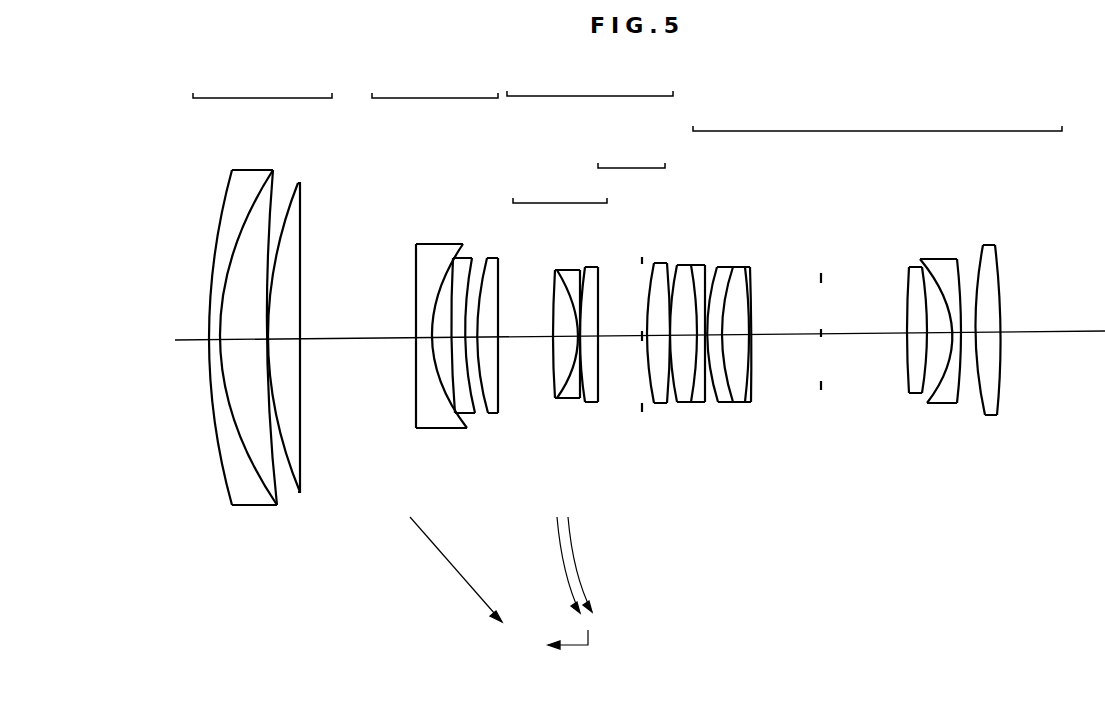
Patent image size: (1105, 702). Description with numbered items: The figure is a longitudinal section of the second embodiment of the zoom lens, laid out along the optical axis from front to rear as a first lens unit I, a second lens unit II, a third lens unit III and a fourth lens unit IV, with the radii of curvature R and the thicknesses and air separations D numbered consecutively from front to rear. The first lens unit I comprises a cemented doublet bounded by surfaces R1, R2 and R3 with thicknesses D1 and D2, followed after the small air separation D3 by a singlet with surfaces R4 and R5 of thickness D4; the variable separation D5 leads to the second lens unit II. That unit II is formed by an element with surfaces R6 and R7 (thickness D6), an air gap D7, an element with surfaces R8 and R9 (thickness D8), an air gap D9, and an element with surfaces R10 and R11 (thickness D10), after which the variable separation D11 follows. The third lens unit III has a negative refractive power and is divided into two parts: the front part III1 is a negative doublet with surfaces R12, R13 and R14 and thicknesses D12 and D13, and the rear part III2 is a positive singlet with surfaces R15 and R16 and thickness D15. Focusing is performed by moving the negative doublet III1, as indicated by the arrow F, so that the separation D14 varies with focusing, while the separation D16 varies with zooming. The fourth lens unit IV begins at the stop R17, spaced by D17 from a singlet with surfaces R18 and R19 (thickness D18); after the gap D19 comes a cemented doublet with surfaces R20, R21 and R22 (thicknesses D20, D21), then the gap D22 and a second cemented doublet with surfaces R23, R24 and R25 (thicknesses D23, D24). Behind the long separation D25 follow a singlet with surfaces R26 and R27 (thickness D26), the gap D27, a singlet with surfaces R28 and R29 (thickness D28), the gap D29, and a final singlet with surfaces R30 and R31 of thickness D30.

The first lens unit I is at (212, 97).
The second lens unit II is at (383, 97).
The third lens unit III is at (552, 95).
The negative doublet III1 is at (513, 203).
The positive singlet III2 is at (598, 168).
The fourth lens unit IV is at (773, 130).
The focusing direction F is at (568, 653).
The radius of curvature R1 is at (227, 190).
The radius of curvature R2 is at (259, 195).
The radius of curvature R3 is at (273, 172).
The radius of curvature R4 is at (289, 210).
The radius of curvature R5 is at (300, 190).
The radius of curvature R6 is at (416, 262).
The radius of curvature R7 is at (436, 262).
The radius of curvature R8 is at (453, 258).
The radius of curvature R9 is at (471, 260).
The radius of curvature R10 is at (487, 260).
The radius of curvature R11 is at (498, 260).
The radius of curvature R12 is at (555, 270).
The radius of curvature R13 is at (560, 270).
The radius of curvature R14 is at (580, 270).
The radius of curvature R15 is at (585, 268).
The radius of curvature R16 is at (598, 268).
The stop R17 is at (653, 265).
The radius of curvature R18 is at (666, 265).
The radius of curvature R19 is at (678, 267).
The radius of curvature R20 is at (691, 267).
The radius of curvature R21 is at (705, 267).
The radius of curvature R22 is at (718, 269).
The radius of curvature R23 is at (733, 269).
The radius of curvature R24 is at (745, 269).
The radius of curvature R25 is at (751, 269).
The radius of curvature R26 is at (909, 269).
The radius of curvature R27 is at (922, 269).
The radius of curvature R28 is at (921, 261).
The radius of curvature R29 is at (957, 261).
The radius of curvature R30 is at (984, 247).
The radius of curvature R31 is at (995, 247).
The lens thickness D1 is at (238, 506).
The lens thickness D2 is at (256, 506).
The air separation D3 is at (276, 500).
The lens thickness D4 is at (298, 494).
The air separation D5 is at (352, 340).
The lens thickness D6 is at (418, 430).
The air separation D7 is at (450, 430).
The lens thickness D8 is at (458, 415).
The air separation D9 is at (474, 415).
The lens thickness D10 is at (492, 415).
The air separation D11 is at (527, 338).
The lens thickness D12 is at (560, 400).
The lens thickness D13 is at (574, 400).
The air separation D14 is at (582, 400).
The lens thickness D15 is at (592, 404).
The air separation D16 is at (627, 337).
The air separation D17 is at (660, 405).
The lens thickness D18 is at (672, 405).
The air separation D19 is at (684, 404).
The lens thickness D20 is at (698, 404).
The lens thickness D21 is at (711, 404).
The air separation D22 is at (726, 404).
The lens thickness D23 is at (742, 404).
The lens thickness D24 is at (753, 404).
The air separation D25 is at (822, 334).
The lens thickness D26 is at (912, 395).
The air separation D27 is at (925, 400).
The lens thickness D28 is at (942, 405).
The air separation D29 is at (972, 410).
The lens thickness D30 is at (992, 417).